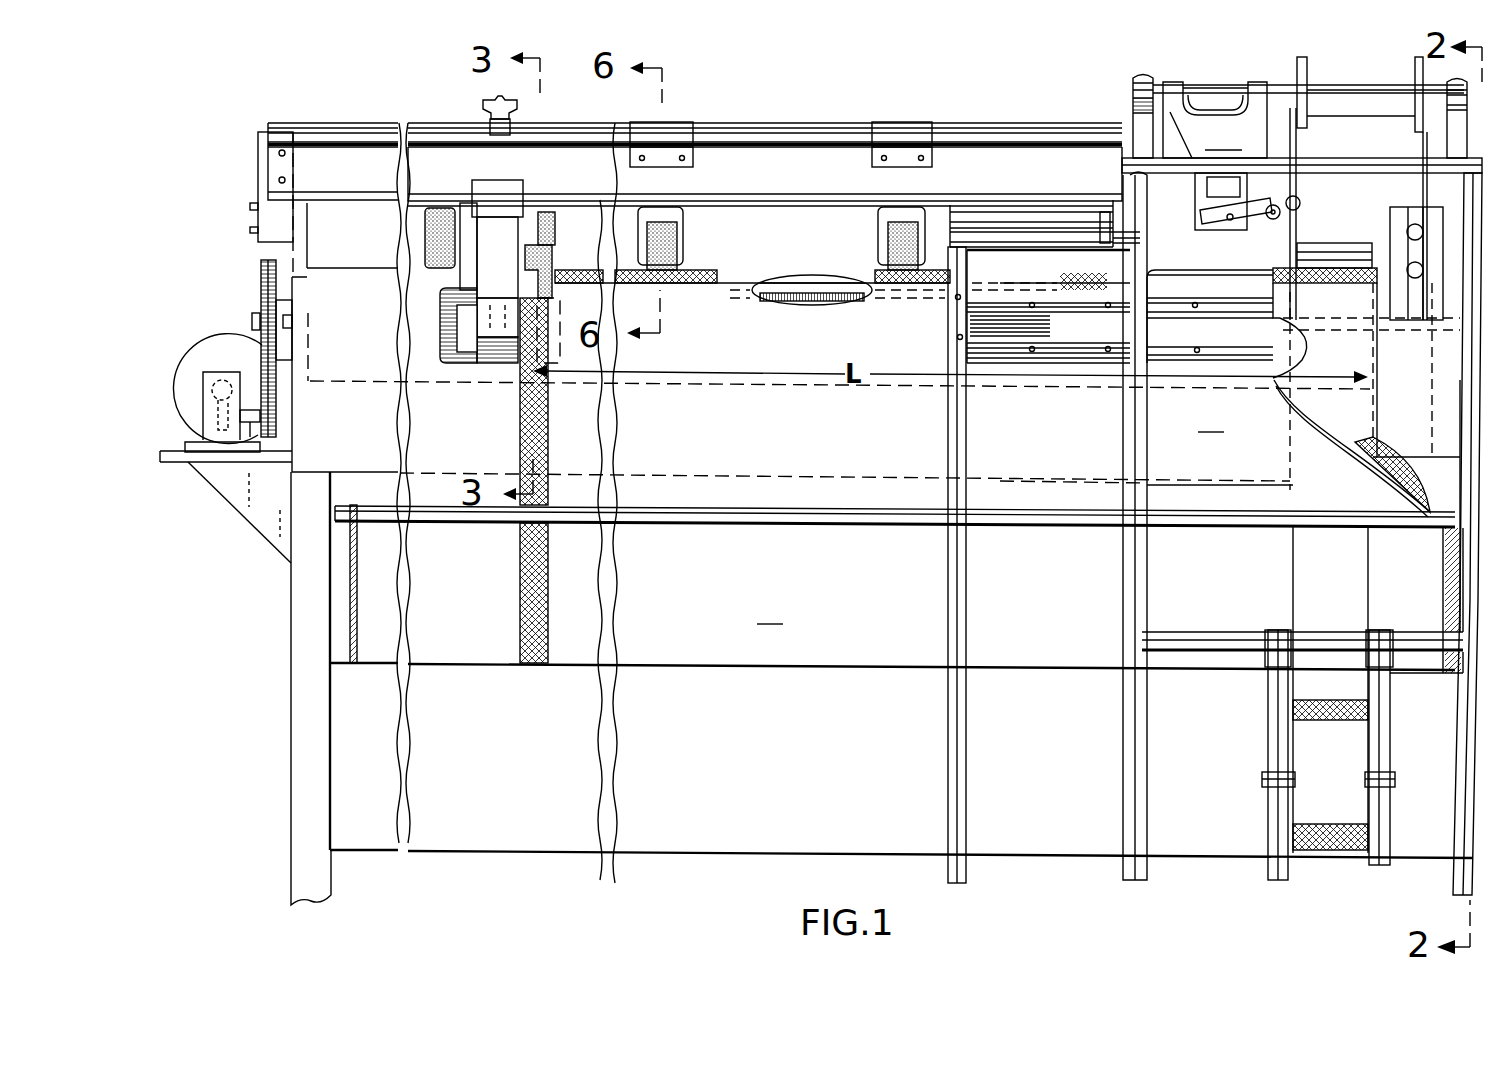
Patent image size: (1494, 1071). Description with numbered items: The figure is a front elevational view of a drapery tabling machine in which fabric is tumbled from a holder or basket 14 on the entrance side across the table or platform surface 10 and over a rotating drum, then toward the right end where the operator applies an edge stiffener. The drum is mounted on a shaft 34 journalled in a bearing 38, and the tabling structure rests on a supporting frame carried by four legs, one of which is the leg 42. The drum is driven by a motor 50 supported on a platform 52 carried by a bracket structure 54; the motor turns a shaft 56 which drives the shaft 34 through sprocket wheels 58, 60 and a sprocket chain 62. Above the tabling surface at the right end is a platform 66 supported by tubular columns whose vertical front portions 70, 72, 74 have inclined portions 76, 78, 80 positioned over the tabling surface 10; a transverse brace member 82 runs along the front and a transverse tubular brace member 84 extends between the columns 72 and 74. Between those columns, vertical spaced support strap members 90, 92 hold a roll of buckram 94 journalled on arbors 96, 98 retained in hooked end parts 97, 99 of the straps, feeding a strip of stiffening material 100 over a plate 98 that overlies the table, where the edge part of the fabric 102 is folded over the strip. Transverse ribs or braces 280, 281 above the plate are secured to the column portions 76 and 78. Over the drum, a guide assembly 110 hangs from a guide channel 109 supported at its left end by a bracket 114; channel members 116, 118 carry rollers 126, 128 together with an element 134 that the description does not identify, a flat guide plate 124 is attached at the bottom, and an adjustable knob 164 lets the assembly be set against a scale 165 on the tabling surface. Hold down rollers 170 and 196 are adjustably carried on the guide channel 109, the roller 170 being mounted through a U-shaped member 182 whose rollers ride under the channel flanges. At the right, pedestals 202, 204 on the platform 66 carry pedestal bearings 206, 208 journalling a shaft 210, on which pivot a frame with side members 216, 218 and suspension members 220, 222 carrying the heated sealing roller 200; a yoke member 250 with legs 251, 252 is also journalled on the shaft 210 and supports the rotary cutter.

The tabling surface 10 is at (347, 437).
The holder or basket 14 is at (901, 564).
The shaft 34 is at (282, 336).
The bearing 38 is at (289, 320).
The supporting leg 42 is at (288, 742).
The motor 50 is at (183, 397).
The platform 52 is at (170, 463).
The bracket structure 54 is at (222, 483).
The shaft 56 is at (262, 385).
The sprocket wheel 58 is at (283, 430).
The sprocket wheel 60 is at (262, 270).
The sprocket chain 62 is at (256, 326).
The platform 66 is at (1410, 172).
The vertical column portion 70 is at (965, 765).
The vertical column portion 72 is at (1123, 765).
The tubular column 74 is at (1458, 722).
The inclined column portion 76 is at (950, 320).
The inclined column portion 78 is at (1133, 322).
The inclined column portion 80 is at (1465, 395).
The transverse brace member 82 is at (895, 515).
The transverse tubular brace member 84 is at (1205, 635).
The vertical support strap member 90 is at (1268, 722).
The vertical support strap member 92 is at (1382, 702).
The roll of buckram 94 is at (1325, 845).
The arbor 96 is at (1265, 782).
The hooked end part 97 is at (1276, 798).
The plate 98 is at (1393, 780).
The hooked end part 99 is at (1385, 795).
The strip of stiffening material 100 is at (1350, 592).
The folded edge part of fabric 102 is at (1360, 438).
The guide channel 109 is at (778, 134).
The guide assembly 110 is at (492, 385).
The bracket 114 is at (258, 214).
The channel member 116 is at (462, 268).
The channel member 118 is at (526, 205).
The flat guide plate 124 is at (448, 340).
The roller 126 is at (430, 224).
The roller 128 is at (548, 221).
The roller 134 is at (545, 260).
The adjustable knob 164 is at (488, 110).
The scale 165 is at (838, 297).
The hold down roller 170 is at (893, 240).
The U-shaped member 182 is at (924, 122).
The hold down roller 196 is at (668, 248).
The heated sealing roller 200 is at (1322, 243).
The pedestal 202 is at (1447, 122).
The pedestal 204 is at (1140, 125).
The pedestal bearing 206 is at (1446, 82).
The pedestal bearing 208 is at (1135, 83).
The shaft 210 is at (1275, 85).
The side member 216 is at (1418, 62).
The side member 218 is at (1308, 66).
The suspension member 220 is at (1423, 140).
The suspension member 222 is at (1314, 142).
The yoke member 250 is at (1215, 120).
The yoke leg 251 is at (1178, 83).
The yoke leg 252 is at (1258, 82).
The transverse rib 280 is at (1012, 305).
The transverse rib 281 is at (975, 349).